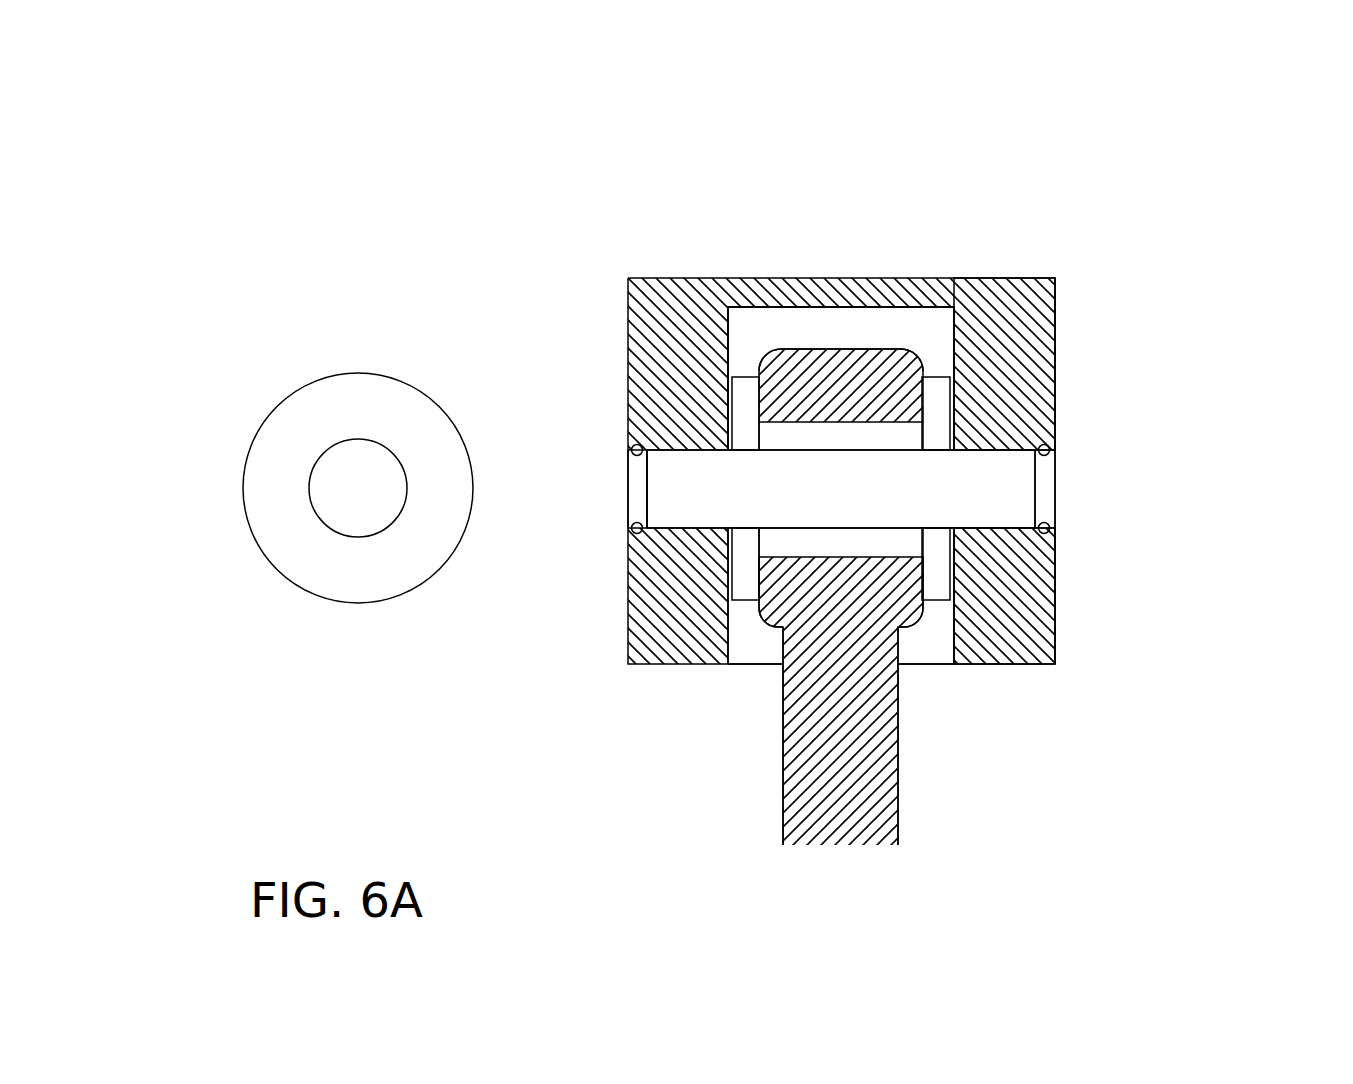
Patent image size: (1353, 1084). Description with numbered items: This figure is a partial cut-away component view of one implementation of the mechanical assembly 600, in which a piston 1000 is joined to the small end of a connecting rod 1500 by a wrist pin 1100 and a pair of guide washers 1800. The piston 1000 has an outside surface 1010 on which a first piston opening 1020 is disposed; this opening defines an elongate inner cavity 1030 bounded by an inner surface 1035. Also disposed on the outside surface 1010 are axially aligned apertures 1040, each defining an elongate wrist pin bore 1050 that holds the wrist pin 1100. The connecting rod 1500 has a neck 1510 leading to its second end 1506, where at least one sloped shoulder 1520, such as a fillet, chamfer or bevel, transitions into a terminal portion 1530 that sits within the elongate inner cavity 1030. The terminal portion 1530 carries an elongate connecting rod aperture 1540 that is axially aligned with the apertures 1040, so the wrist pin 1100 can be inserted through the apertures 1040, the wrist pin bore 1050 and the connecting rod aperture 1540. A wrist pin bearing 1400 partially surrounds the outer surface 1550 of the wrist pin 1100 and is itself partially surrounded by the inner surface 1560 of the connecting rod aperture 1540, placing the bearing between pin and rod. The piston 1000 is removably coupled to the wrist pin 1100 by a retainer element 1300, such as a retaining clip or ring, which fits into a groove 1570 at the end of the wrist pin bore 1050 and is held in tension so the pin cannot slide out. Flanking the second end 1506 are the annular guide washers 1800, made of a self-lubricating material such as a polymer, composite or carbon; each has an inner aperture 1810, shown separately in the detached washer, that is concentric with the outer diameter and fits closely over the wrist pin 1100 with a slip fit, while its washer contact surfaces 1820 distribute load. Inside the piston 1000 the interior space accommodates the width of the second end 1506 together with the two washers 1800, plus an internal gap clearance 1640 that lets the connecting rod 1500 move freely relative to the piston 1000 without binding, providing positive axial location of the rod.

The mechanical assembly 600 is at (290, 113).
The piston 1000 is at (957, 277).
The outside surface 1010 is at (1057, 345).
The first piston opening 1020 is at (777, 677).
The elongate inner cavity 1030 is at (925, 328).
The inner surface 1035 is at (726, 312).
The axially aligned apertures 1040 is at (1057, 488).
The elongate wrist pin bore 1050 is at (638, 487).
The wrist pin 1100 is at (1039, 483).
The retainer element 1300 is at (1053, 537).
The wrist pin bearing 1400 is at (955, 605).
The connecting rod 1500 is at (773, 840).
The second end 1506 is at (735, 672).
The neck 1510 is at (783, 754).
The shoulder 1520 is at (758, 642).
The terminal portion 1530 is at (839, 606).
The elongate connecting rod aperture 1540 is at (772, 447).
The outer surface 1550 is at (797, 398).
The inner surface 1560 is at (818, 398).
The groove 1570 is at (635, 441).
The internal gap clearance 1640 is at (778, 620).
The guide washer 1800 is at (749, 373).
The inner aperture 1810 is at (358, 437).
The washer contact surfaces 1820 is at (957, 528).